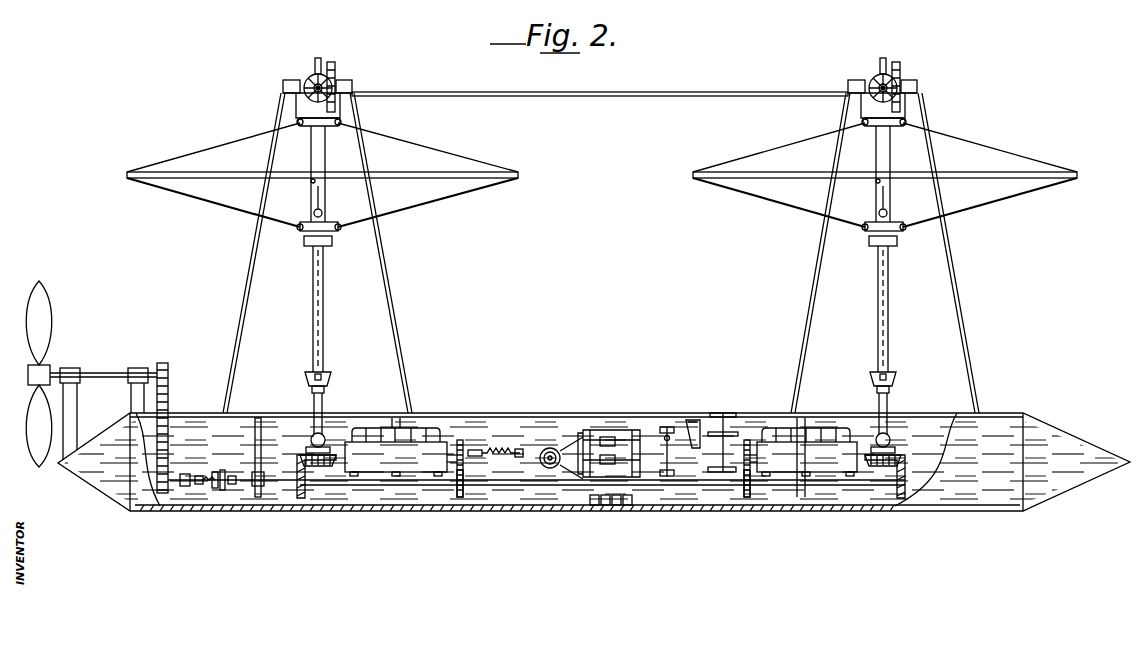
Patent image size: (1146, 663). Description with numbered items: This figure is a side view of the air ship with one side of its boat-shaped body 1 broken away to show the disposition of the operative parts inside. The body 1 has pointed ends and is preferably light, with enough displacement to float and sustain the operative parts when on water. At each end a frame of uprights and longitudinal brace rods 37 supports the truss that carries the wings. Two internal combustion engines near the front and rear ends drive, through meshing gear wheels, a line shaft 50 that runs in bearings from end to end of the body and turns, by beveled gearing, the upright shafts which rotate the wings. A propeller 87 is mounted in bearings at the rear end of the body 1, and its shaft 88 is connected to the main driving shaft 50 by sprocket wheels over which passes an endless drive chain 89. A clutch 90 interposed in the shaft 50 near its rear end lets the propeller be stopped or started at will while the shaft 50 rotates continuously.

The body 1 is at (1010, 508).
The longitudinal brace rods 37 is at (660, 98).
The line shaft 50 is at (566, 486).
The propeller 87 is at (45, 327).
The propeller shaft 88 is at (98, 373).
The endless drive chain 89 is at (165, 411).
The clutch 90 is at (215, 490).